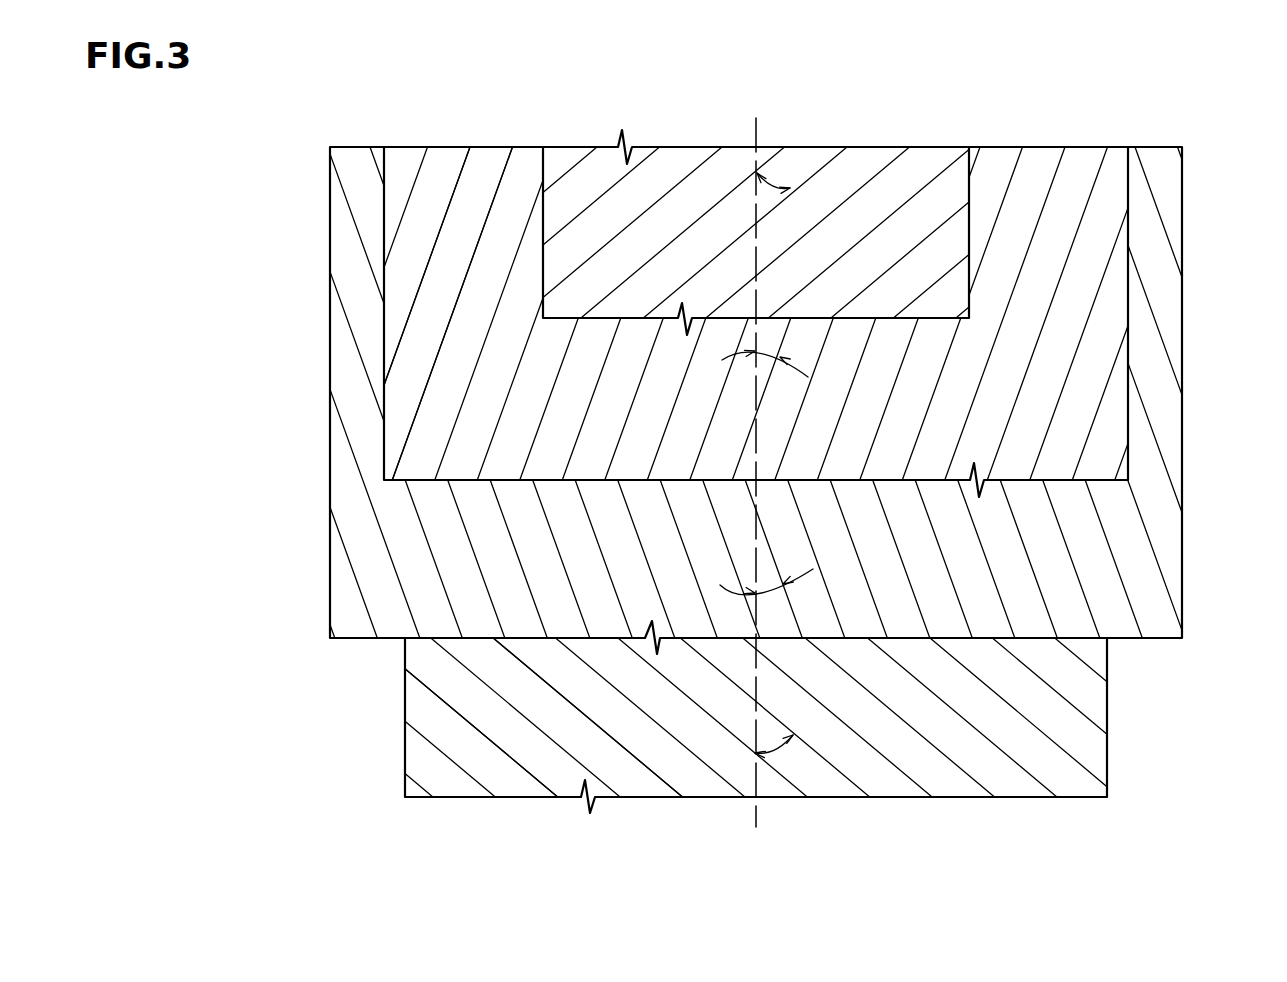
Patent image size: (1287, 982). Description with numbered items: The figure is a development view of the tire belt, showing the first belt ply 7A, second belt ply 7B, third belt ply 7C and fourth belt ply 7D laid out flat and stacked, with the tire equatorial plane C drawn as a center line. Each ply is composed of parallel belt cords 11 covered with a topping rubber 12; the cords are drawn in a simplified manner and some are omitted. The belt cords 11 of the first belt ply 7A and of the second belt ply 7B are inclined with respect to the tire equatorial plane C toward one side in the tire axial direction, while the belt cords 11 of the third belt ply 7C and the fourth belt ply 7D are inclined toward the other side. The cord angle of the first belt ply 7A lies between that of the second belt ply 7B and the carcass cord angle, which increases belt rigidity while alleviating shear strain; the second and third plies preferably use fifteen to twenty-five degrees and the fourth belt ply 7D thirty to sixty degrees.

The first belt ply 7A is at (1013, 733).
The second belt ply 7B is at (1152, 508).
The third belt ply 7C is at (1027, 210).
The fourth belt ply 7D is at (913, 225).
The belt cords 11 is at (455, 192).
The topping rubber 12 is at (484, 176).
The tire equatorial plane C is at (756, 488).